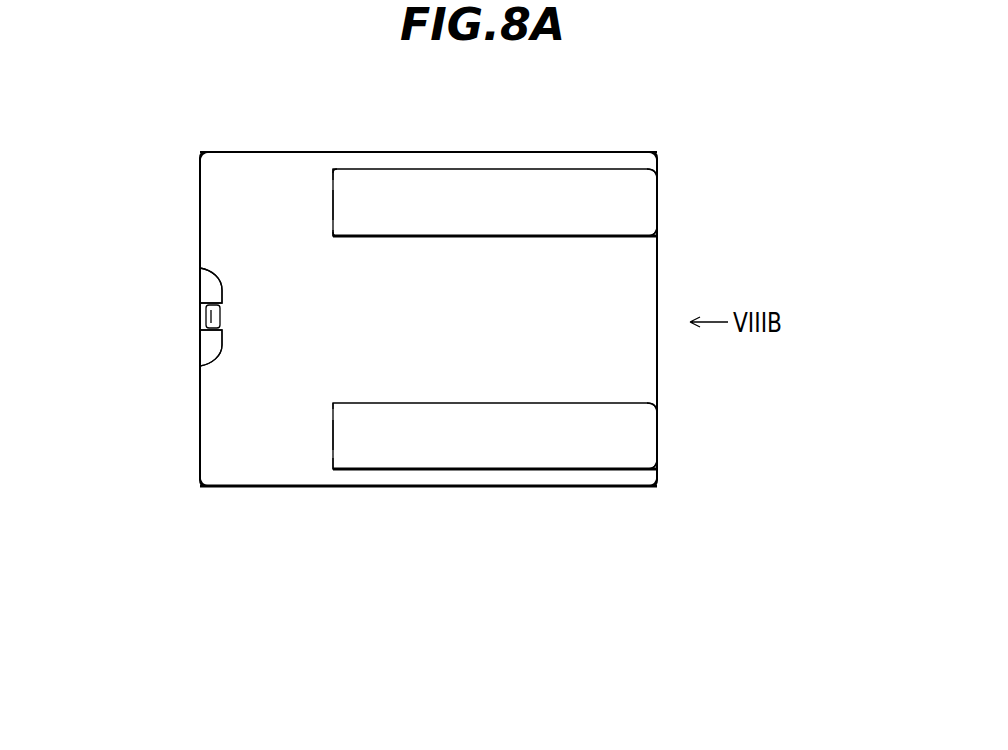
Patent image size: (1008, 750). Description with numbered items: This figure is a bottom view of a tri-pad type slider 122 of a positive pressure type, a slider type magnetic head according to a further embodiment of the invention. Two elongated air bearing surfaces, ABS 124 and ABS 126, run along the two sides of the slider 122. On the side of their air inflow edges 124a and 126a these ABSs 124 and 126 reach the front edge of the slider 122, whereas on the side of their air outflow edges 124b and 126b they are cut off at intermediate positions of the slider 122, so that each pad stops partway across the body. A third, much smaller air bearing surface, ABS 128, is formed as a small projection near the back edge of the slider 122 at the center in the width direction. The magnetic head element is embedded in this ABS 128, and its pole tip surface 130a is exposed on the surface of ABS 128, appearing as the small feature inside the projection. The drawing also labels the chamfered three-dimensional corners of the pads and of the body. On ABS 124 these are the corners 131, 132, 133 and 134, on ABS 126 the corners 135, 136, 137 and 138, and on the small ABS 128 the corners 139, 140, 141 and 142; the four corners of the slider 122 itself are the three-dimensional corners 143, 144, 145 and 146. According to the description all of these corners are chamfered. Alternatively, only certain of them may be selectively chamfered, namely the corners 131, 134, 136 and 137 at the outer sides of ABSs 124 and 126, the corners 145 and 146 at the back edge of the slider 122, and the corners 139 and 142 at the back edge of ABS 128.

The slider 122 is at (903, 125).
The ABS 124 is at (516, 193).
The air inflow edge 124a is at (657, 207).
The air outflow edge 124b is at (333, 205).
The ABS 126 is at (516, 443).
The air inflow edge 126a is at (657, 430).
The air outflow edge 126b is at (333, 431).
The ABS 128 is at (173, 324).
The pole tip surface 130a is at (205, 326).
The three-dimensional corner 131 is at (657, 171).
The three-dimensional corner 132 is at (657, 236).
The three-dimensional corner 133 is at (333, 232).
The three-dimensional corner 134 is at (334, 169).
The three-dimensional corner 135 is at (657, 405).
The three-dimensional corner 136 is at (657, 470).
The three-dimensional corner 137 is at (334, 469).
The three-dimensional corner 138 is at (333, 402).
The three-dimensional corner 139 is at (203, 338).
The three-dimensional corner 140 is at (215, 356).
The three-dimensional corner 141 is at (206, 270).
The three-dimensional corner 142 is at (205, 303).
The three-dimensional corner 143 is at (657, 152).
The three-dimensional corner 144 is at (657, 486).
The three-dimensional corner 145 is at (200, 486).
The three-dimensional corner 146 is at (200, 152).